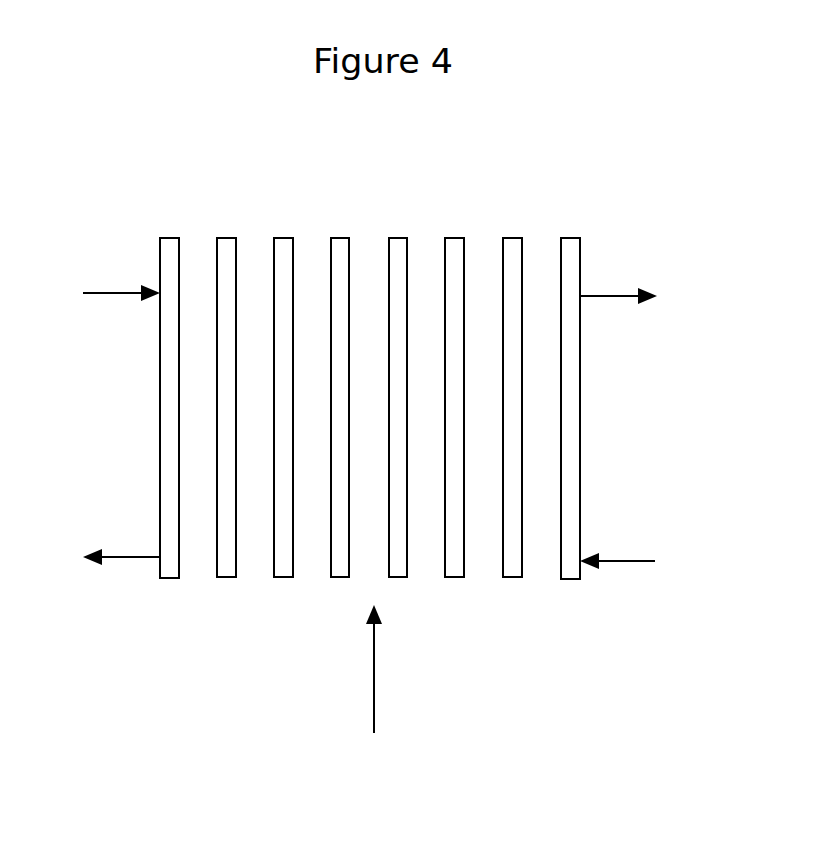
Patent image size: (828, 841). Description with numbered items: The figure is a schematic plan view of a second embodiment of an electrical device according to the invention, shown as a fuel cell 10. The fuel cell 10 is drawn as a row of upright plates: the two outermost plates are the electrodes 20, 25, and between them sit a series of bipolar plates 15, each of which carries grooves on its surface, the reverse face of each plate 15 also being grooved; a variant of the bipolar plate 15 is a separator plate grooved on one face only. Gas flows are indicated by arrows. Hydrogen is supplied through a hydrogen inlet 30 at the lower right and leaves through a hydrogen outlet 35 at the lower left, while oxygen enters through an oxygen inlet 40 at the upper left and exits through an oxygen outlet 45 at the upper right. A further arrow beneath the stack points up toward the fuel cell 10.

The fuel cell 10 is at (372, 698).
The bipolar plates 15 is at (522, 238).
The electrode 20 is at (160, 578).
The electrode 25 is at (560, 580).
The hydrogen inlet 30 is at (635, 561).
The hydrogen outlet 35 is at (120, 557).
The oxygen inlet 40 is at (122, 293).
The oxygen outlet 45 is at (619, 296).